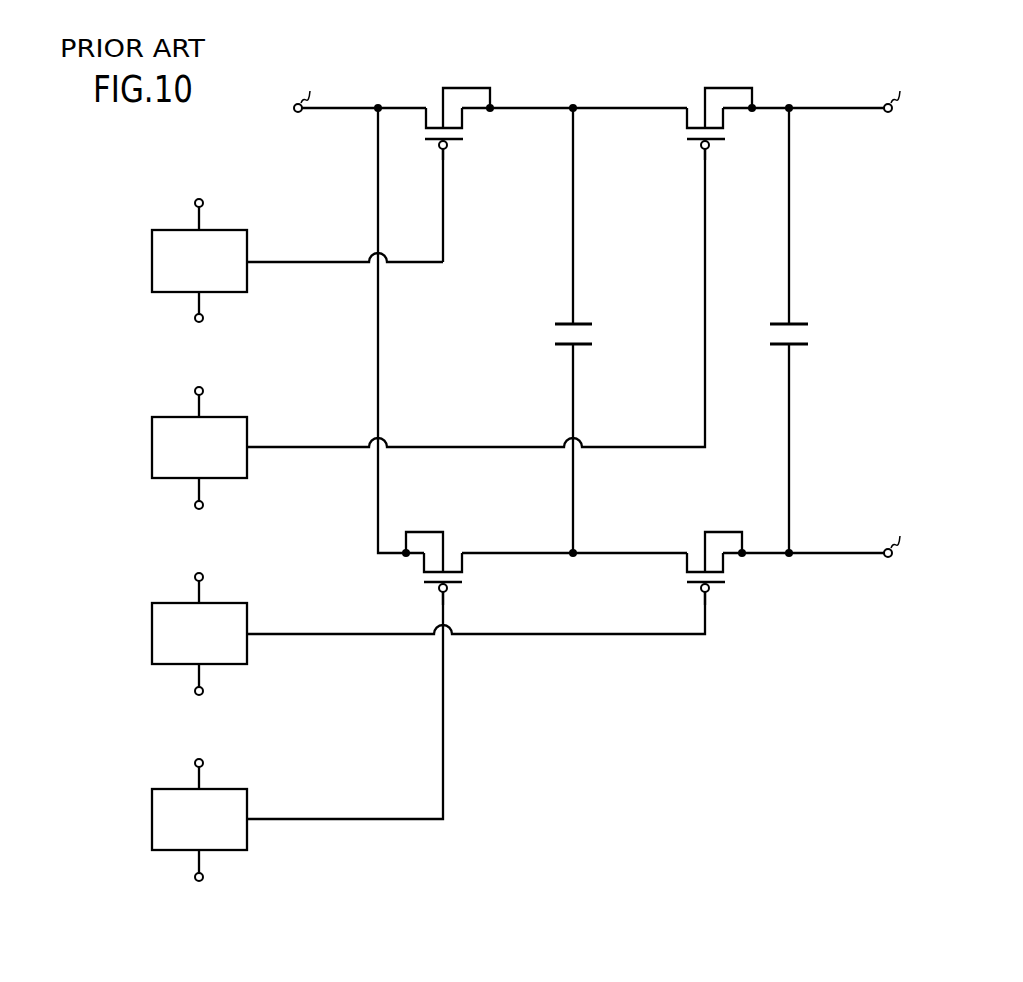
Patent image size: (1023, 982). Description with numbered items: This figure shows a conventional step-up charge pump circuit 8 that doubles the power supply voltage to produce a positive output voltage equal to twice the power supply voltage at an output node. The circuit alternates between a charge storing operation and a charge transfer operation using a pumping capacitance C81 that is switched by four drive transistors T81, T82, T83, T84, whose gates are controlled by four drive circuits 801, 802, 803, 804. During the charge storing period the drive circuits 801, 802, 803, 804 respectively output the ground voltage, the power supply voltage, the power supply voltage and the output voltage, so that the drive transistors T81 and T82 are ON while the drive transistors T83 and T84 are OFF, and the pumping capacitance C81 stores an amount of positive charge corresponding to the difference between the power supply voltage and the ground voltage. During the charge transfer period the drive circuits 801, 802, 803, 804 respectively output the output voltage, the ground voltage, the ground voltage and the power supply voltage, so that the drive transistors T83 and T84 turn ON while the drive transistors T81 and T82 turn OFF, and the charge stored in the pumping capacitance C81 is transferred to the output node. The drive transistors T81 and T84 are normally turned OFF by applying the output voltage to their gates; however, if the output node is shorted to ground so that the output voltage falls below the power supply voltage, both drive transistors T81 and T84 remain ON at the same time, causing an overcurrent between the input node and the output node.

The charge pump circuit (prior art) 8 is at (906, 781).
The drive transistor T81 is at (438, 144).
The drive transistor T82 is at (700, 586).
The drive transistor T83 is at (438, 586).
The drive transistor T84 is at (700, 144).
The pumping capacitance C81 is at (566, 322).
The drive circuit 801 is at (219, 230).
The drive circuit 802 is at (219, 603).
The drive circuit 803 is at (219, 789).
The drive circuit 804 is at (219, 417).